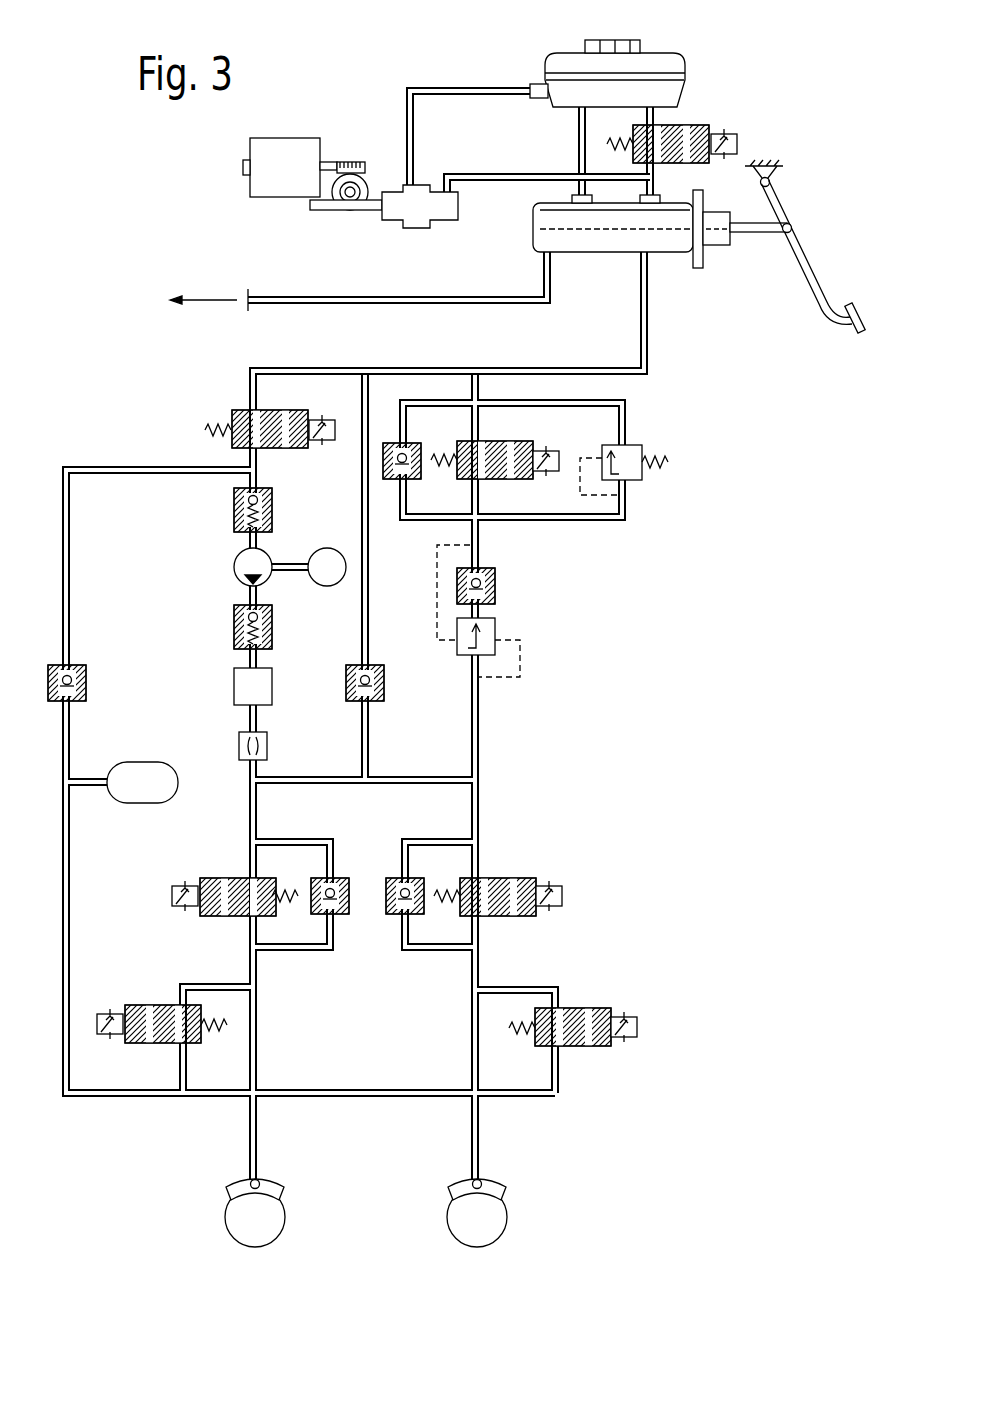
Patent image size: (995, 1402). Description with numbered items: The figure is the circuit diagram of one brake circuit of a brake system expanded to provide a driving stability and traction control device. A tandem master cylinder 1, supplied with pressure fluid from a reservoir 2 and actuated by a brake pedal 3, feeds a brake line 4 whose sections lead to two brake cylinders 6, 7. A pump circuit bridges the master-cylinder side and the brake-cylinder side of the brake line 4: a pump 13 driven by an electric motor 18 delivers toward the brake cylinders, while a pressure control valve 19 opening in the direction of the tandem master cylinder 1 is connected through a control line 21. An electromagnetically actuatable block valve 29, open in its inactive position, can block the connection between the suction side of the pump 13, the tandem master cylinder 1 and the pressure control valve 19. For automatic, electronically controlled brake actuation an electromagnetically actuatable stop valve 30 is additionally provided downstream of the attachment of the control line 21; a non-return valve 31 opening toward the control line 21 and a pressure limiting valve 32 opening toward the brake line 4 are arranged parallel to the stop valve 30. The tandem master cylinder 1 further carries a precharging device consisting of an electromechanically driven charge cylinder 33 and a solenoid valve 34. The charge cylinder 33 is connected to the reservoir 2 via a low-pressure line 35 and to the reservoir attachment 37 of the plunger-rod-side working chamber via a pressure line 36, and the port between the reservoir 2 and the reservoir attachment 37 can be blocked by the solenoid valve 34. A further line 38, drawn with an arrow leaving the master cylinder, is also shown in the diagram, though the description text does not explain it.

The tandem master cylinder 1 is at (672, 245).
The reservoir 2 is at (645, 62).
The brake pedal 3 is at (820, 302).
The brake line 4 is at (648, 345).
The brake cylinder 6 is at (238, 1183).
The brake cylinder 7 is at (494, 1183).
The pump 13 is at (234, 562).
The electric motor 18 is at (338, 528).
The pressure control valve 19 is at (497, 630).
The control line 21 is at (437, 592).
The block valve 29 is at (232, 418).
The stop valve 30 is at (520, 480).
The non-return valve 31 is at (393, 480).
The pressure limiting valve 32 is at (640, 483).
The charge cylinder 33 is at (395, 213).
The solenoid valve 34 is at (690, 125).
The low-pressure line 35 is at (456, 88).
The pressure line 36 is at (478, 183).
The reservoir attachment 37 is at (650, 204).
The return line 38 is at (248, 292).